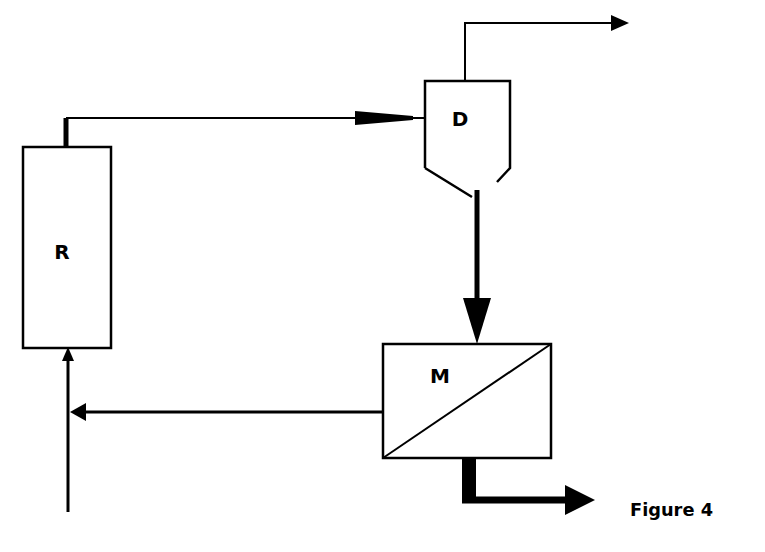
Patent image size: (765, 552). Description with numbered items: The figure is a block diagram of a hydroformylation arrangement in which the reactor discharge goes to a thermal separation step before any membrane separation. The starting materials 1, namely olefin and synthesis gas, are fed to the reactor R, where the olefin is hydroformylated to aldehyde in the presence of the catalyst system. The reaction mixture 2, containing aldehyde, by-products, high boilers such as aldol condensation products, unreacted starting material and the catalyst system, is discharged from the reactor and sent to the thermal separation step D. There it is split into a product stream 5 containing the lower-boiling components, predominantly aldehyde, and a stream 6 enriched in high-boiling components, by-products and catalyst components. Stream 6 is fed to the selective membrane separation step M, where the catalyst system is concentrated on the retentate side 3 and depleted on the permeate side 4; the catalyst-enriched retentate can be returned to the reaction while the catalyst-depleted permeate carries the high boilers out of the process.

The starting materials 1 is at (58, 429).
The reaction mixture 2 is at (245, 115).
The retentate side 3 is at (485, 267).
The permeate side 4 is at (547, 48).
The product stream 5 is at (226, 426).
The stream enriched in high-boiling components 6 is at (528, 486).